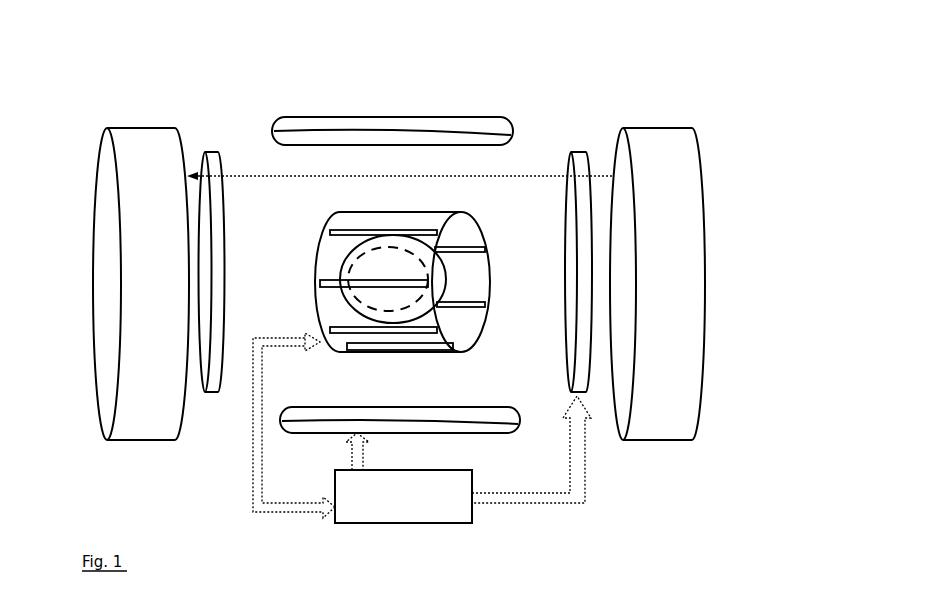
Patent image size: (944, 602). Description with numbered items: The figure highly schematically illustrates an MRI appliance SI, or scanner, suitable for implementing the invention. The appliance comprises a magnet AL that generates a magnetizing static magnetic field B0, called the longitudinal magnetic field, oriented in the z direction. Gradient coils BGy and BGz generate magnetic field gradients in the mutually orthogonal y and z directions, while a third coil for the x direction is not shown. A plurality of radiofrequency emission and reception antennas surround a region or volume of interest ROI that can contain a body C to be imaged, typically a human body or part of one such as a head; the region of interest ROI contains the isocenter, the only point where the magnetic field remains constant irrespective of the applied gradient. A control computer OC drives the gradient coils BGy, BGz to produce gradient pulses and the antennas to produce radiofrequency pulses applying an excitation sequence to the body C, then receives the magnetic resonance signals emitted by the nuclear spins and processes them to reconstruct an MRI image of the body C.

The MRI appliance SI is at (511, 98).
The magnet AL is at (111, 405).
The coil BGz is at (212, 393).
The coil BGy is at (272, 121).
The magnetizing static magnetic field B0 is at (514, 175).
The body C is at (418, 248).
The region of interest ROI is at (349, 272).
The control computer OC is at (422, 428).